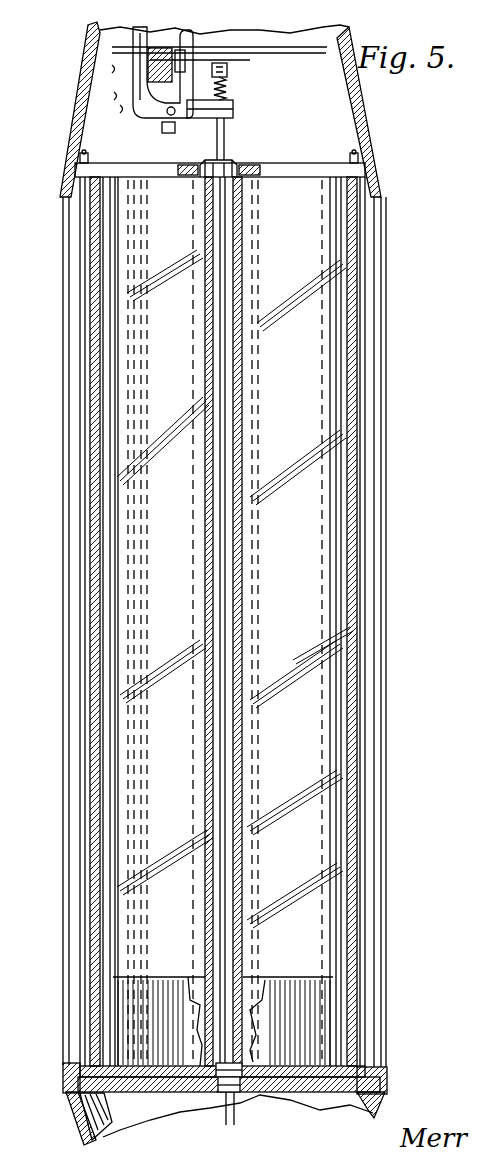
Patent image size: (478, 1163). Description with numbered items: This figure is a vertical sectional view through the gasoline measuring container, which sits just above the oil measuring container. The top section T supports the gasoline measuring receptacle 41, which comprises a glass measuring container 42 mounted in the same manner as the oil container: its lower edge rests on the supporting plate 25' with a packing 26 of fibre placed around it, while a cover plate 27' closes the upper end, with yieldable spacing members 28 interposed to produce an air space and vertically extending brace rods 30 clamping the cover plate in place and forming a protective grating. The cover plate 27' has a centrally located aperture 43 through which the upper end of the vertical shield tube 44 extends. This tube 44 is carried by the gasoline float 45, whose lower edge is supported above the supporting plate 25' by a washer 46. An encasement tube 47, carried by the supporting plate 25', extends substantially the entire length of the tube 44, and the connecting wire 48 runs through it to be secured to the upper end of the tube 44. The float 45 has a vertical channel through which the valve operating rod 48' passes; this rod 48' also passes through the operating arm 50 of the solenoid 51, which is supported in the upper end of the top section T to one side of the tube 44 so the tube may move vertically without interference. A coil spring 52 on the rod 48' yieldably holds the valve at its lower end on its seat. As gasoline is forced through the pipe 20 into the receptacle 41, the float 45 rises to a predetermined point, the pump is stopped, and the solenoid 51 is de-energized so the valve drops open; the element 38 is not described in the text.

The top section T is at (244, 579).
The solenoid 51 is at (155, 89).
The coil spring 52 is at (245, 81).
The operating arm 50 is at (231, 112).
The valve operating rod 48' is at (192, 140).
The aperture 43 is at (228, 157).
The cover plate 27' is at (220, 147).
The yieldable spacing members 28 is at (338, 173).
The brace rods 30 is at (252, 621).
The glass measuring container 42 is at (256, 621).
The gasoline measuring receptacle 41 is at (338, 540).
The vertical shield tube 44 is at (246, 621).
The encasement tube 47 is at (261, 621).
The gasoline float 45 is at (223, 1003).
The supporting plate 25' is at (222, 1111).
The washer 46 is at (257, 1107).
The connecting wire 48 is at (211, 1120).
The pipe 20 is at (240, 1124).
The packing 26 is at (66, 1118).
The right flange 38 is at (392, 1080).